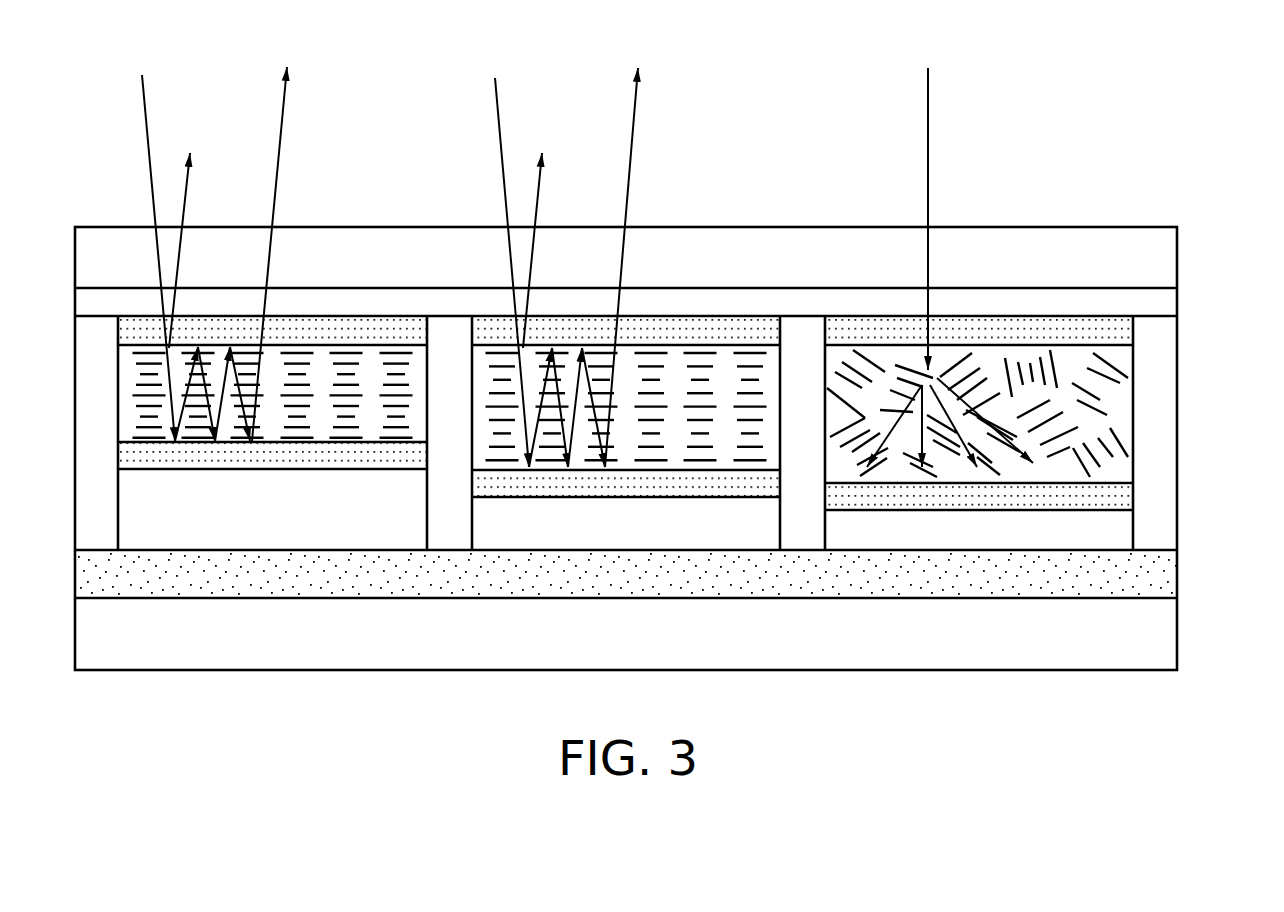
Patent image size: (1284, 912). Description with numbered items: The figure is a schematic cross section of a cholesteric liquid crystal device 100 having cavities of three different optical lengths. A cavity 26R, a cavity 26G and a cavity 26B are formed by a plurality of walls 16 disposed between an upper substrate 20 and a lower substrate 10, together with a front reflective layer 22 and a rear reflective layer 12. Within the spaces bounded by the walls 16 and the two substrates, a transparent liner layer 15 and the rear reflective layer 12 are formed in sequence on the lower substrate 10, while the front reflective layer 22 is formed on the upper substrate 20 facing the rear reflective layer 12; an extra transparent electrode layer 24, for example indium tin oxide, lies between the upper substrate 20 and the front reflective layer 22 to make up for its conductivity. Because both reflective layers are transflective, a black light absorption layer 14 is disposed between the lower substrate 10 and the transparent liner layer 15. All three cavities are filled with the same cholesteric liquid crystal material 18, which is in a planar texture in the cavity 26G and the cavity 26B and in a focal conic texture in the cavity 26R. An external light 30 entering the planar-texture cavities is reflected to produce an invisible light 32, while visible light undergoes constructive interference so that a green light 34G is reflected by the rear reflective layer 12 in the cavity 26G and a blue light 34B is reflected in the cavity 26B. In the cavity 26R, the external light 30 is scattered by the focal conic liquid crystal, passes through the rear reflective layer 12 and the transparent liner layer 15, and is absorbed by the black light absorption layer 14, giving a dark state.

The cholesteric liquid crystal device 100 is at (1193, 113).
The lower substrate 10 is at (1165, 638).
The rear reflective layer 12 is at (1120, 494).
The black light absorption layer 14 is at (1165, 580).
The transparent liner layer 15 is at (1118, 538).
The walls 16 is at (1165, 428).
The cholesteric liquid crystal material 18 is at (1107, 403).
The upper substrate 20 is at (1165, 262).
The front reflective layer 22 is at (1128, 330).
The transparent electrode layer 24 is at (1165, 305).
The cavity 26B is at (376, 364).
The cavity 26G is at (728, 364).
The cavity 26R is at (1082, 367).
The external light 30 is at (146, 108).
The invisible light 32 is at (186, 208).
The blue light 34B is at (283, 123).
The green light 34G is at (637, 125).